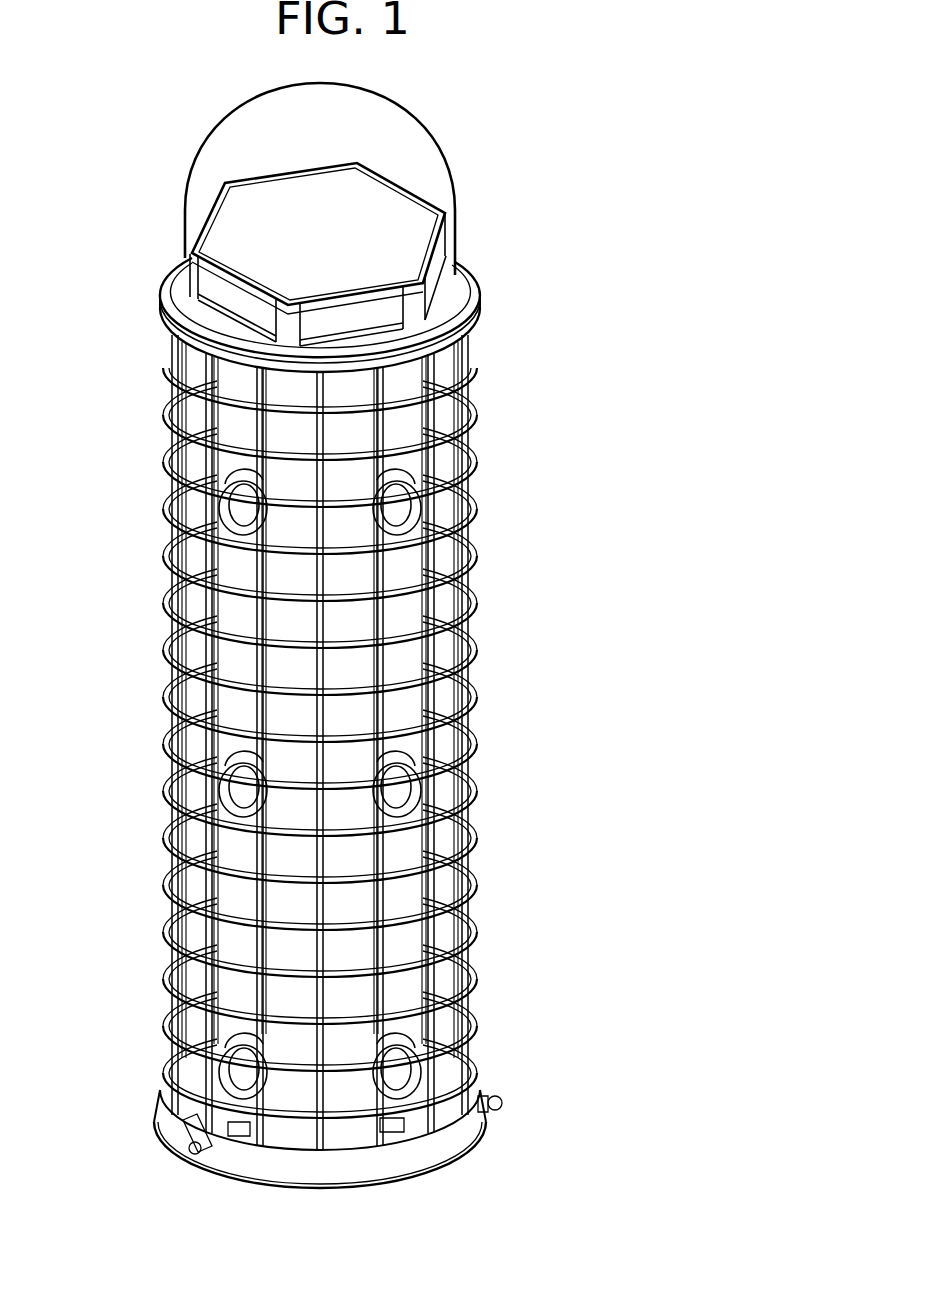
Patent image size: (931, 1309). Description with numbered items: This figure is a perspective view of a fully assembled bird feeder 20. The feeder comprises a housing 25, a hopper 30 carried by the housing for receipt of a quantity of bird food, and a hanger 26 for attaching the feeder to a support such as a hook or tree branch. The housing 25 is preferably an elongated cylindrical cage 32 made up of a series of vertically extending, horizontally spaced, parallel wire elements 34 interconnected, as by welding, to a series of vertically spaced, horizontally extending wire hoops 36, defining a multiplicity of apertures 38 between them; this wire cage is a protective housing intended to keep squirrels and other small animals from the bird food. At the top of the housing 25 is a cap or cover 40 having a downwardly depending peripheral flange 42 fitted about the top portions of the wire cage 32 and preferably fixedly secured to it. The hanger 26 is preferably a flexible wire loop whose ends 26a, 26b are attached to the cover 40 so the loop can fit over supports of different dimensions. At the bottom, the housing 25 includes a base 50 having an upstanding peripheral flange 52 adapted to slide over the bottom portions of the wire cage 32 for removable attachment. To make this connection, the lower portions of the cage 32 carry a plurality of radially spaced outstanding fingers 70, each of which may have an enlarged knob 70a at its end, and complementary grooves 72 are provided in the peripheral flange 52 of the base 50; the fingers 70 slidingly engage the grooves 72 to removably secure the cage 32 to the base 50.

The bird feeder 20 is at (528, 539).
The housing 25 is at (484, 843).
The hanger 26 is at (433, 129).
The hanger end 26a is at (456, 300).
The hanger end 26b is at (185, 278).
The hopper 30 is at (403, 665).
The cage 32 is at (483, 698).
The wire elements 34 is at (156, 700).
The wire hoops 36 is at (168, 551).
The apertures 38 is at (242, 840).
The cover 40 is at (487, 312).
The peripheral flange 42 is at (470, 332).
The base 50 is at (396, 1159).
The peripheral flange 52 is at (330, 1178).
The fingers 70 is at (493, 1094).
The knob 70a is at (501, 1110).
The grooves 72 is at (176, 1131).